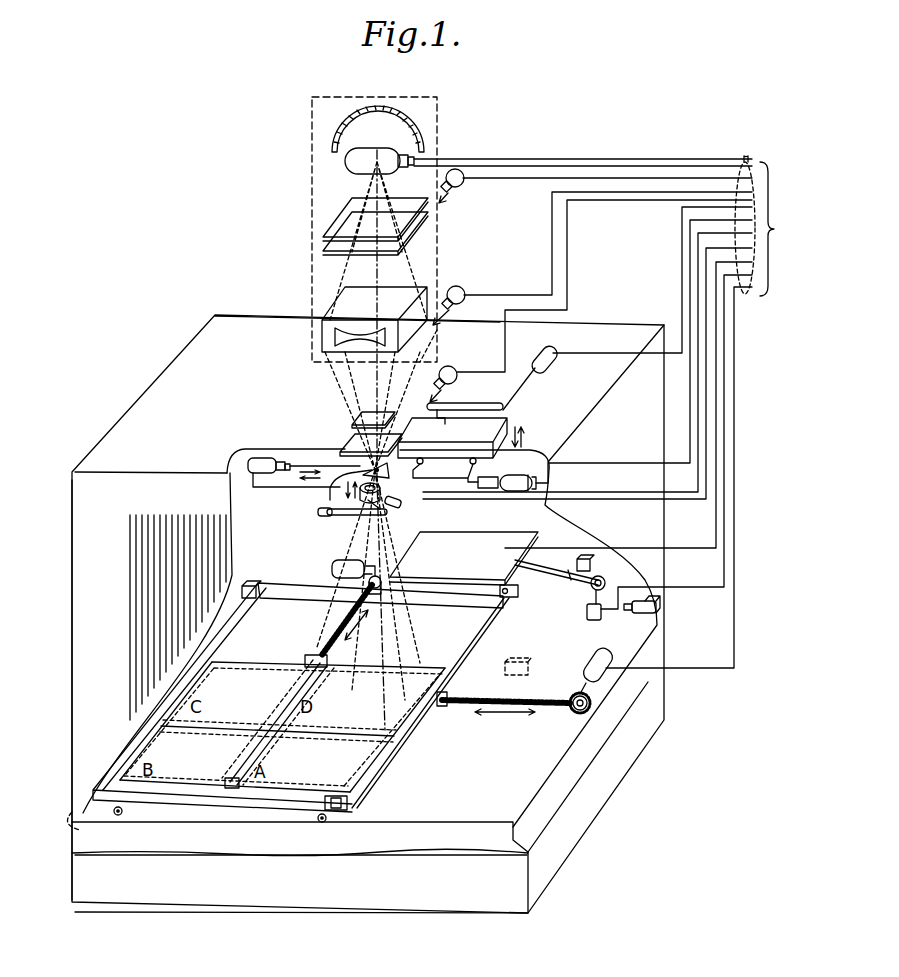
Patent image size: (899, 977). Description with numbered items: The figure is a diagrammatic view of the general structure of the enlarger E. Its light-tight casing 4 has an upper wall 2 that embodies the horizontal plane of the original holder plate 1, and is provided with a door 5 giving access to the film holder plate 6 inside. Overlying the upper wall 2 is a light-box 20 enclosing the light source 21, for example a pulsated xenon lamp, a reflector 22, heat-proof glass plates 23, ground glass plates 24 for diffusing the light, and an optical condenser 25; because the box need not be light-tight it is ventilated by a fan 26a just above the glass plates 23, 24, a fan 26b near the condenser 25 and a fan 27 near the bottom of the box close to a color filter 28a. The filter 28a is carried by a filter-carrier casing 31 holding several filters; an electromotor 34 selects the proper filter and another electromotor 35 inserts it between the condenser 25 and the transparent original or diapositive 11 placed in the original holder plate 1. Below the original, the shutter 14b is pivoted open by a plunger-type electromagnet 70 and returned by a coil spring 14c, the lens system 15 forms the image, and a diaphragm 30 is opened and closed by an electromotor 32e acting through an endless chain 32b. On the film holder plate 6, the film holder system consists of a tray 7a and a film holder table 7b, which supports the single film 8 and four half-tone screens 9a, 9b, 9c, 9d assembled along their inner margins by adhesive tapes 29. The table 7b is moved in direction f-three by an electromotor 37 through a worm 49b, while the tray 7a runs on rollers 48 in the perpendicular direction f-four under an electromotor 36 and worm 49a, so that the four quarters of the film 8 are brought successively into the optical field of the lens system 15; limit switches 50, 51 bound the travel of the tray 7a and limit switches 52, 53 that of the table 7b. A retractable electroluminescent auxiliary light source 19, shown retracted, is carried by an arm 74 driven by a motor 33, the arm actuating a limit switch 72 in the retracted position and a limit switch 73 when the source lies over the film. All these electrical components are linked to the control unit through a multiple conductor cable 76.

The original holder plate 1 is at (348, 447).
The upper wall 2 is at (196, 356).
The light-tight casing 4 is at (72, 692).
The door 5 is at (132, 522).
The film holder plate 6 is at (433, 840).
The tray 7a is at (392, 748).
The film holder table 7b is at (444, 664).
The film 8 is at (305, 660).
The half-tone screen 9a is at (276, 796).
The half-tone screen 9b is at (153, 796).
The half-tone screen 9c is at (240, 664).
The half-tone screen 9d is at (391, 668).
The transparent original or diapositive 11 is at (355, 421).
The shutter 14b is at (350, 476).
The coil spring 14c is at (452, 450).
The lens system 15 is at (382, 489).
The auxiliary light source 19 is at (478, 542).
The light-box 20 is at (440, 110).
The light source 21 is at (348, 160).
The reflector 22 is at (348, 131).
The heat-proof glass plates 23 is at (352, 207).
The ground glass plates 24 is at (323, 246).
The optical condenser 25 is at (332, 311).
The fan 26a is at (460, 188).
The fan 26b is at (459, 290).
The fan 27 is at (456, 370).
The color filter 28a is at (432, 358).
The adhesive tapes 29 is at (280, 742).
The diaphragm 30 is at (362, 517).
The filter-carrier casing 31 is at (506, 414).
The endless chain 32b is at (320, 514).
The electromotor 32e is at (400, 503).
The motor 33 is at (597, 622).
The electromotor 34 is at (540, 484).
The electromotor 35 is at (553, 356).
The electromotor 36 is at (590, 665).
The electromotor 37 is at (332, 566).
The rollers 48 is at (326, 821).
The worm 49a is at (465, 705).
The worm 49b is at (338, 622).
The limit switch 50 is at (657, 614).
The limit switch 51 is at (251, 583).
The limit switch 52 is at (514, 590).
The limit switch 53 is at (352, 803).
The electromagnet 70 is at (264, 457).
The limit switch 72 is at (592, 566).
The limit switch 73 is at (512, 660).
The arm 74 is at (560, 584).
The multiple conductor cable 76 is at (746, 160).
The enlarger E is at (156, 377).